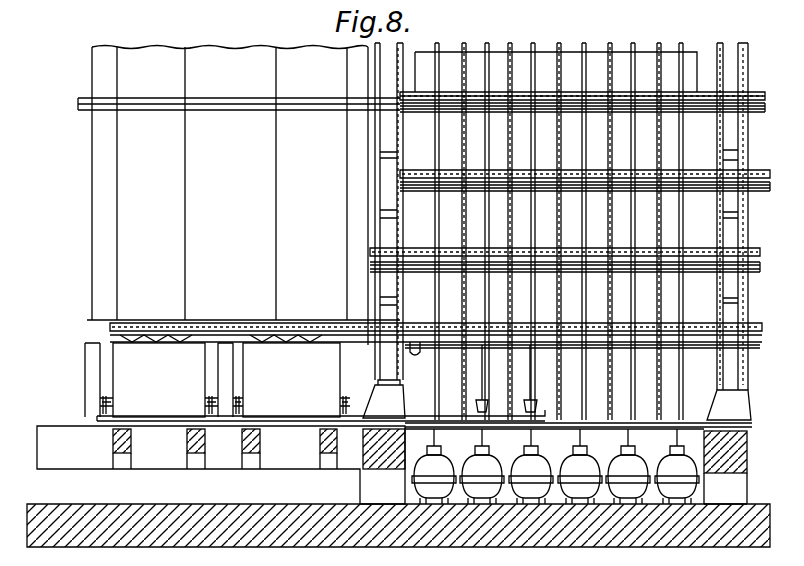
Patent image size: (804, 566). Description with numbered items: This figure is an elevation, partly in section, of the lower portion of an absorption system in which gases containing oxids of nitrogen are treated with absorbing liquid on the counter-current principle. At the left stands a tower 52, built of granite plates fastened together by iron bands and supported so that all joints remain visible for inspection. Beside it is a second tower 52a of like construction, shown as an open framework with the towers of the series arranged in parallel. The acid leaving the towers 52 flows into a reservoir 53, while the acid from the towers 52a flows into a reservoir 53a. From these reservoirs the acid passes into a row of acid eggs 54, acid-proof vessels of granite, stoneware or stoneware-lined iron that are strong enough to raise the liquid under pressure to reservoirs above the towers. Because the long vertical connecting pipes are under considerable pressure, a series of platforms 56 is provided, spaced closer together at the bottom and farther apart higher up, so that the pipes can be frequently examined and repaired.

The tower 52 is at (239, 196).
The tower 52a is at (693, 55).
The reservoir 53 is at (242, 382).
The reservoir 53a is at (375, 382).
The acid egg 54 is at (441, 460).
The platform 56 is at (492, 168).